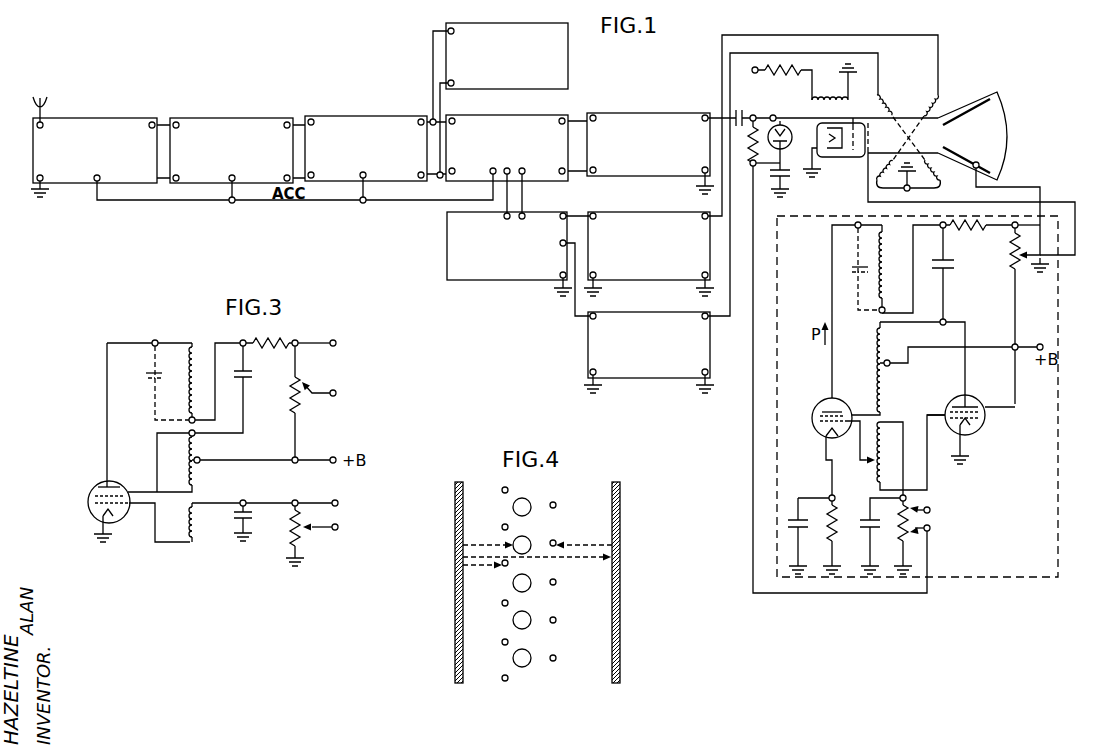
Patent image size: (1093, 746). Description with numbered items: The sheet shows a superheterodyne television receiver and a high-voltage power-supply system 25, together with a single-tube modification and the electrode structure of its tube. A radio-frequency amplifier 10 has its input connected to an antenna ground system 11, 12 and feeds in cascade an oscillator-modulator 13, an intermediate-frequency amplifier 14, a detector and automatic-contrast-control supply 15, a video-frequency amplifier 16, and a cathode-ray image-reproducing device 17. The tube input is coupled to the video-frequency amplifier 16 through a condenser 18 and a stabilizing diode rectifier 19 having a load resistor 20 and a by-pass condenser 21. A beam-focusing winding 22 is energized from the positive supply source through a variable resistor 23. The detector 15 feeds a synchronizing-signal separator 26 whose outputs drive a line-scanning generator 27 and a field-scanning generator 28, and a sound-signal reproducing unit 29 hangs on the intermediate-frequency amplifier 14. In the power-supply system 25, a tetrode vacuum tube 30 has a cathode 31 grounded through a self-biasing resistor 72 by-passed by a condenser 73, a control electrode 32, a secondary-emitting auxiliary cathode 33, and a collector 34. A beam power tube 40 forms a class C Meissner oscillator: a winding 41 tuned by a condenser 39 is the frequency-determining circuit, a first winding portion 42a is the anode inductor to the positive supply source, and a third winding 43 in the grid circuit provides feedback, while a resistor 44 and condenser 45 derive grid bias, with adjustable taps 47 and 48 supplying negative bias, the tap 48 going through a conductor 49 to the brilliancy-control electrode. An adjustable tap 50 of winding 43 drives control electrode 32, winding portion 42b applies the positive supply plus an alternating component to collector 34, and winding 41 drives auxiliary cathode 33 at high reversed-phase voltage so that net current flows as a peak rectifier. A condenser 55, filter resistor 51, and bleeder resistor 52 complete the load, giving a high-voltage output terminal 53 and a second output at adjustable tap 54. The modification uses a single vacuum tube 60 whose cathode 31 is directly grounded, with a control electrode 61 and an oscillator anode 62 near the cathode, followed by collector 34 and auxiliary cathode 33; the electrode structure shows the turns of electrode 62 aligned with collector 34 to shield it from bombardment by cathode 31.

In FIG. 1, the radio-frequency amplifier 10 is at (112, 118).
In FIG. 1, the antenna 11 is at (46, 110).
In FIG. 1, the ground 12 is at (37, 193).
In FIG. 1, the oscillator-modulator 13 is at (232, 118).
In FIG. 1, the intermediate-frequency amplifier 14 is at (369, 116).
In FIG. 1, the detector and automatic-contrast-control supply 15 is at (546, 116).
In FIG. 1, the video-frequency amplifier 16 is at (630, 113).
In FIG. 1, the image-reproducing device 17 is at (1012, 118).
In FIG. 1, the condenser 18 is at (742, 110).
In FIG. 1, the stabilizing diode rectifier 19 is at (791, 142).
In FIG. 1, the load resistor 20 is at (757, 157).
In FIG. 1, the by-pass condenser 21 is at (785, 178).
In FIG. 1, the beam-focusing winding 22 is at (835, 95).
In FIG. 1, the variable resistor 23 is at (799, 63).
In FIG. 1, the high-voltage power-supply system 25 is at (1058, 366).
In FIG. 1, the synchronizing-signal separator 26 is at (486, 280).
In FIG. 1, the line-scanning generator 27 is at (609, 212).
In FIG. 1, the field-scanning generator 28 is at (614, 378).
In FIG. 1, the sound-signal reproducing unit 29 is at (516, 23).
In FIG. 1, the vacuum tube 30 is at (858, 436).
In FIG. 1, the cathode 31 is at (824, 437).
In FIG. 3, the cathode 31 is at (101, 516).
In FIG. 4, the cathode 31 is at (455, 538).
In FIG. 1, the control electrode 32 is at (818, 418).
In FIG. 1, the auxiliary cathode 33 is at (836, 409).
In FIG. 3, the auxiliary cathode 33 is at (108, 486).
In FIG. 4, the auxiliary cathode 33 is at (620, 557).
In FIG. 1, the collector 34 is at (820, 411).
In FIG. 3, the collector 34 is at (97, 487).
In FIG. 4, the collector 34 is at (556, 659).
In FIG. 1, the condenser 39 is at (851, 266).
In FIG. 3, the condenser 39 is at (150, 372).
In FIG. 1, the beam power tube 40 is at (982, 418).
In FIG. 1, the winding 41 is at (884, 264).
In FIG. 3, the winding 41 is at (188, 388).
In FIG. 1, the first portion of second winding 42a is at (886, 362).
In FIG. 3, the first portion of second winding 42a is at (195, 440).
In FIG. 1, the winding portion 42b is at (884, 395).
In FIG. 3, the winding portion 42b is at (190, 462).
In FIG. 1, the third transformer winding 43 is at (884, 428).
In FIG. 3, the third transformer winding 43 is at (196, 532).
In FIG. 1, the resistor 44 is at (900, 528).
In FIG. 3, the resistor 44 is at (292, 525).
In FIG. 1, the condenser 45 is at (836, 527).
In FIG. 3, the condenser 45 is at (233, 516).
In FIG. 1, the adjustable tap 47 is at (928, 508).
In FIG. 3, the adjustable tap 47 is at (338, 501).
In FIG. 1, the adjustable tap 48 is at (931, 525).
In FIG. 3, the adjustable tap 48 is at (334, 525).
In FIG. 1, the conductor 49 is at (752, 548).
In FIG. 1, the adjustable tap 50 is at (866, 461).
In FIG. 1, the filter resistor 51 is at (962, 231).
In FIG. 3, the filter resistor 51 is at (278, 335).
In FIG. 1, the bleeder resistor 52 is at (1010, 258).
In FIG. 3, the bleeder resistor 52 is at (298, 410).
In FIG. 1, the high-voltage direct current output terminal 53 is at (1017, 228).
In FIG. 3, the high-voltage direct current output terminal 53 is at (345, 326).
In FIG. 1, the adjustable tap 54 is at (1028, 272).
In FIG. 3, the adjustable tap 54 is at (350, 383).
In FIG. 1, the condenser 55 is at (950, 266).
In FIG. 3, the condenser 55 is at (250, 375).
In FIG. 3, the vacuum tube 60 is at (123, 505).
In FIG. 3, the control electrode 61 is at (94, 503).
In FIG. 4, the control electrode 61 is at (505, 675).
In FIG. 3, the oscillator anode 62 is at (94, 496).
In FIG. 4, the oscillator anode 62 is at (526, 652).
In FIG. 1, the self-biasing resistor 72 is at (835, 499).
In FIG. 1, the condenser 73 is at (800, 527).